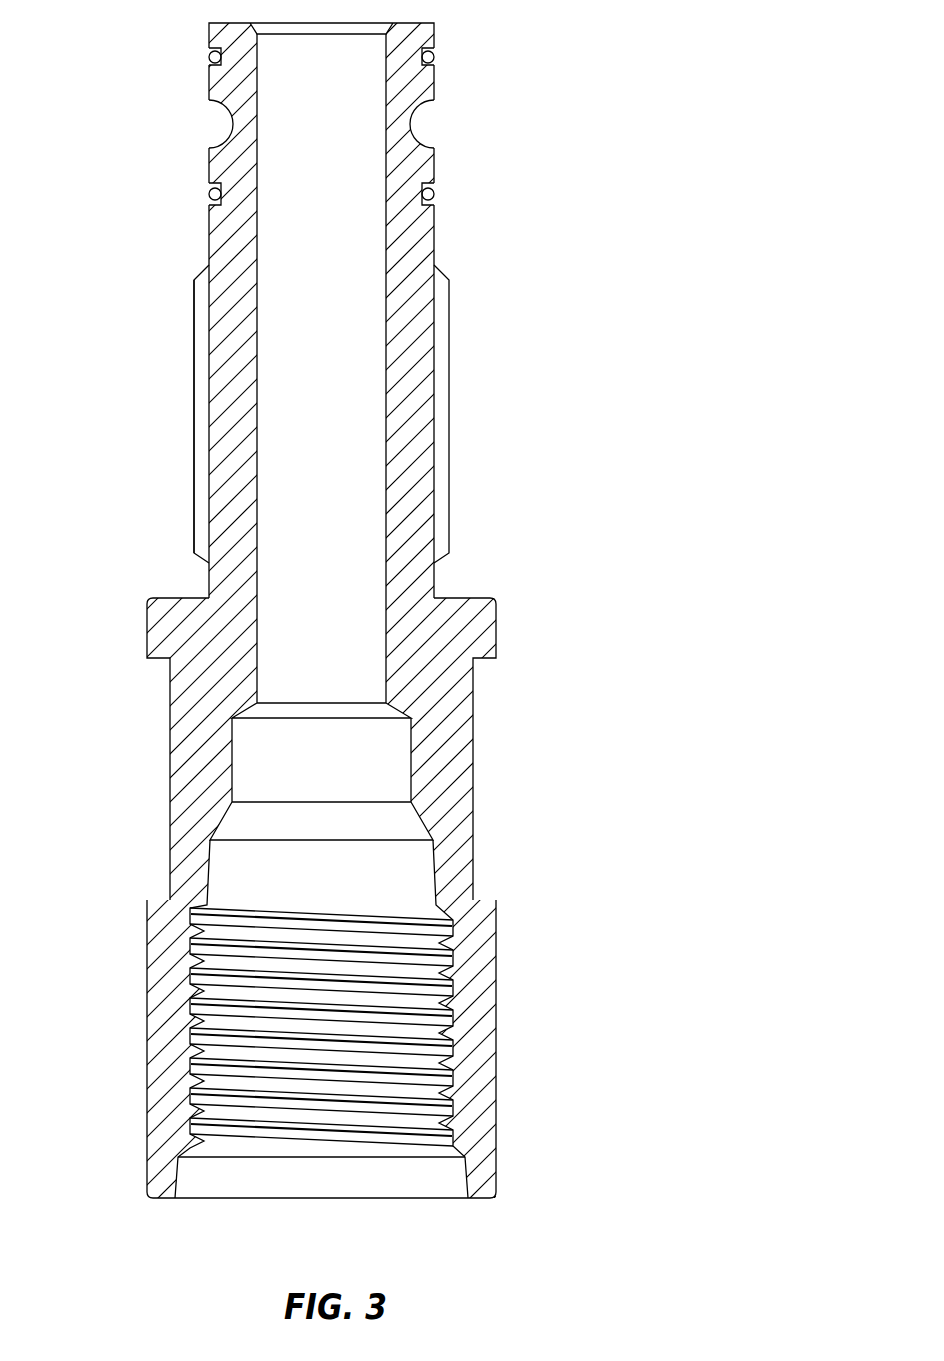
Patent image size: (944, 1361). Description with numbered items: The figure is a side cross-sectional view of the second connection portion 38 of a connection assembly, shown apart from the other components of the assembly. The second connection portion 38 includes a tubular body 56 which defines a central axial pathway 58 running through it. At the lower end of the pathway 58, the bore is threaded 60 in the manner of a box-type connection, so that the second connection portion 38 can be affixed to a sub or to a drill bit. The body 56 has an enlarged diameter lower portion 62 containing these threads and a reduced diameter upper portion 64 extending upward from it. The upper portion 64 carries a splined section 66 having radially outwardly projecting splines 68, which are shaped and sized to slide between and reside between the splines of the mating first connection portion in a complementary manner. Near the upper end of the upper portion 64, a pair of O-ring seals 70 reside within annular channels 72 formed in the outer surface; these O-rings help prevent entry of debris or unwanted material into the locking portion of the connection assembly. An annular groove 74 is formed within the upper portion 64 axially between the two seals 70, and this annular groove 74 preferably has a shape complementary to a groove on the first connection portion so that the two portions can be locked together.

The second connection portion 38 is at (472, 608).
The tubular body 56 is at (192, 699).
The central axial pathway 58 is at (259, 491).
The threads 60 is at (183, 1065).
The enlarged diameter lower portion 62 is at (498, 987).
The reduced diameter upper portion 64 is at (434, 231).
The splined section 66 is at (195, 480).
The splines 68 is at (202, 362).
The O-ring seals 70 is at (433, 58).
The annular channels 72 is at (210, 50).
The annular groove 74 is at (233, 125).